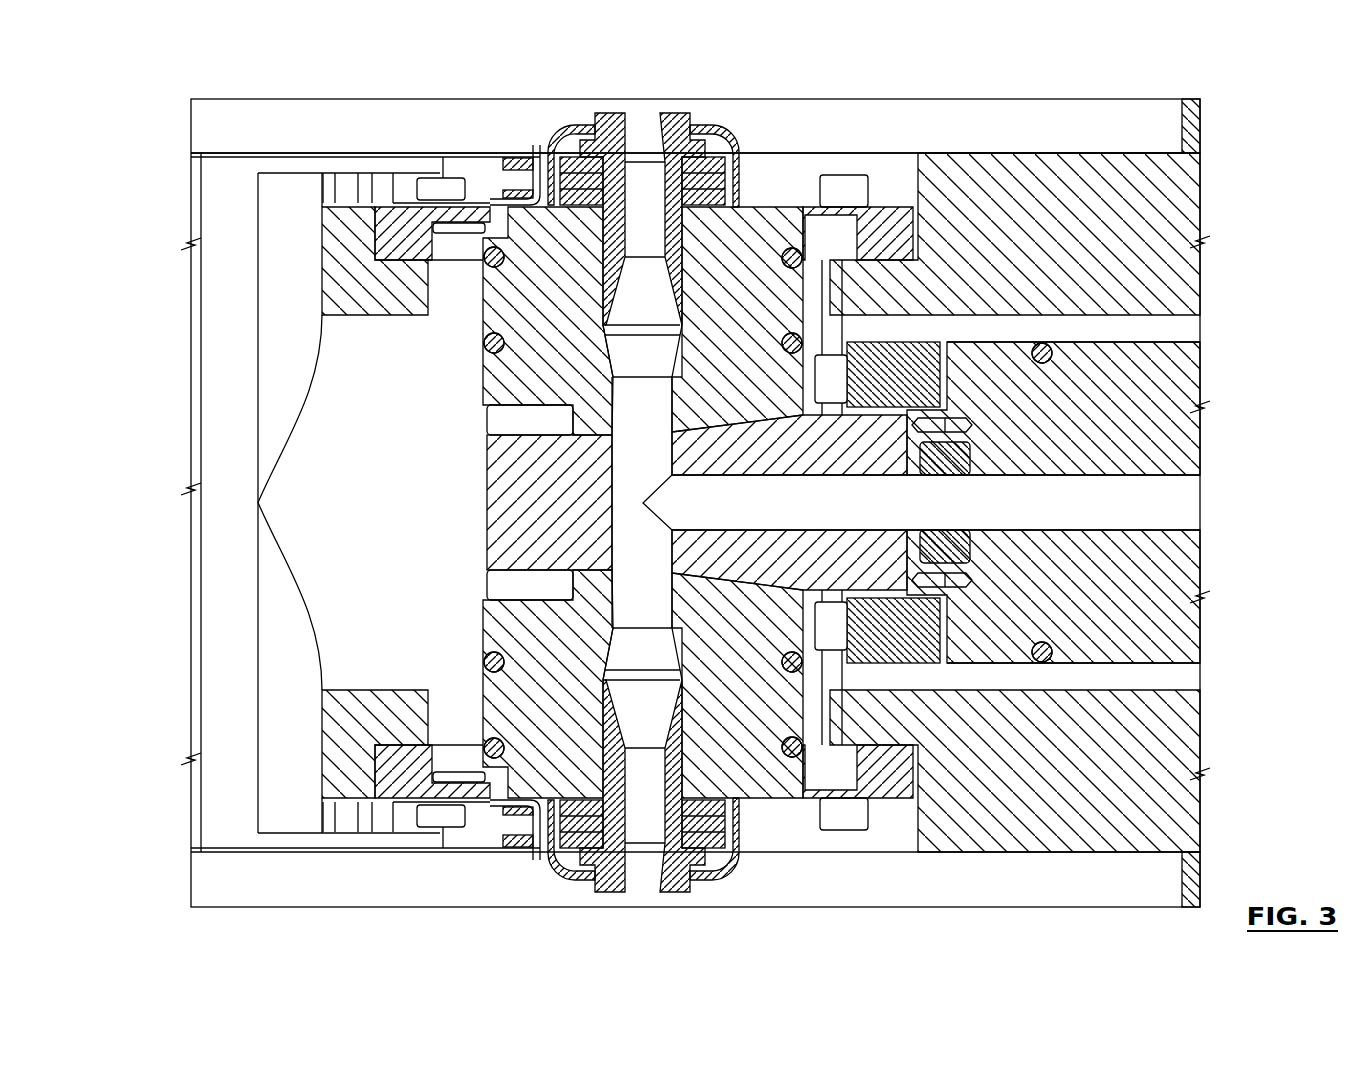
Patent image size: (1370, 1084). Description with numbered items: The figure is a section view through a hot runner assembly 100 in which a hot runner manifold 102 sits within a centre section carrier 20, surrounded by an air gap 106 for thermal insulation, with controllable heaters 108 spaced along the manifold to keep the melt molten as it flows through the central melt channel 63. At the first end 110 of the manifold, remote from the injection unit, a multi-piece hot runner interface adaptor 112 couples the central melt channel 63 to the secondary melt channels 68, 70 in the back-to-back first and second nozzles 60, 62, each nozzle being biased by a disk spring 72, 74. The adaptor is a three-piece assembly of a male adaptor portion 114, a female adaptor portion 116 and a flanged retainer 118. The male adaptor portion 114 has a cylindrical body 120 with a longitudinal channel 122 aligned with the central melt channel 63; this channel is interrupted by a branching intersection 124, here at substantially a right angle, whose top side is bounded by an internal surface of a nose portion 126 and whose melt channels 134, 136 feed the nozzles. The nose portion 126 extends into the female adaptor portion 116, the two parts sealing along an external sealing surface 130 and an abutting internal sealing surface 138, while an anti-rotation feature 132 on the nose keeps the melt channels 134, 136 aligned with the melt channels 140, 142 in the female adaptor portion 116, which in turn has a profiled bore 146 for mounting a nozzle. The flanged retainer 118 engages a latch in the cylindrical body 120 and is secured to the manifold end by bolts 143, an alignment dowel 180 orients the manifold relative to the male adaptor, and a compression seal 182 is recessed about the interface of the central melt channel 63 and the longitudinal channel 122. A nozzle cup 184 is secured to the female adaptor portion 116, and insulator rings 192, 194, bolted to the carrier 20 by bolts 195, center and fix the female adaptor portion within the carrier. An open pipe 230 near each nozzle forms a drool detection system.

The hot runner assembly 100 is at (204, 91).
The centre section carrier 20 is at (340, 234).
The first nozzle 60 is at (603, 893).
The second nozzle 62 is at (675, 128).
The central melt channel 63 is at (1182, 500).
The secondary melt channel 68 is at (645, 832).
The secondary melt channel 70 is at (645, 180).
The disk spring 72 is at (577, 873).
The disk spring 74 is at (715, 150).
The hot runner manifold 102 is at (1175, 385).
The air gap 106 is at (1185, 330).
The controllable heaters 108 is at (1045, 345).
The first end of the hot runner manifold 110 is at (993, 363).
The hot runner interface adaptor 112 is at (713, 445).
The male adaptor portion 114 is at (768, 567).
The female adaptor portion 116 is at (838, 190).
The flanged retainer 118 is at (923, 673).
The cylindrical body 120 is at (803, 727).
The longitudinal channel 122 is at (722, 515).
The branching intersection 124 is at (565, 487).
The nose portion 126 is at (513, 552).
The external sealing surface 130 is at (610, 577).
The anti-rotation feature 132 is at (487, 507).
The melt channel 134 is at (621, 561).
The melt channel 136 is at (621, 468).
The internal sealing surface 138 is at (690, 392).
The melt channel 140 is at (621, 622).
The melt channel 142 is at (621, 422).
The bolts 143 is at (838, 390).
The profiled bore 146 is at (752, 240).
The alignment dowel 180 is at (973, 417).
The compression seal 182 is at (970, 548).
The nozzle cup 184 is at (582, 128).
The insulator ring 192 is at (1000, 150).
The insulator ring 194 is at (372, 787).
The bolts 195 is at (425, 183).
The open pipe 230 is at (535, 145).